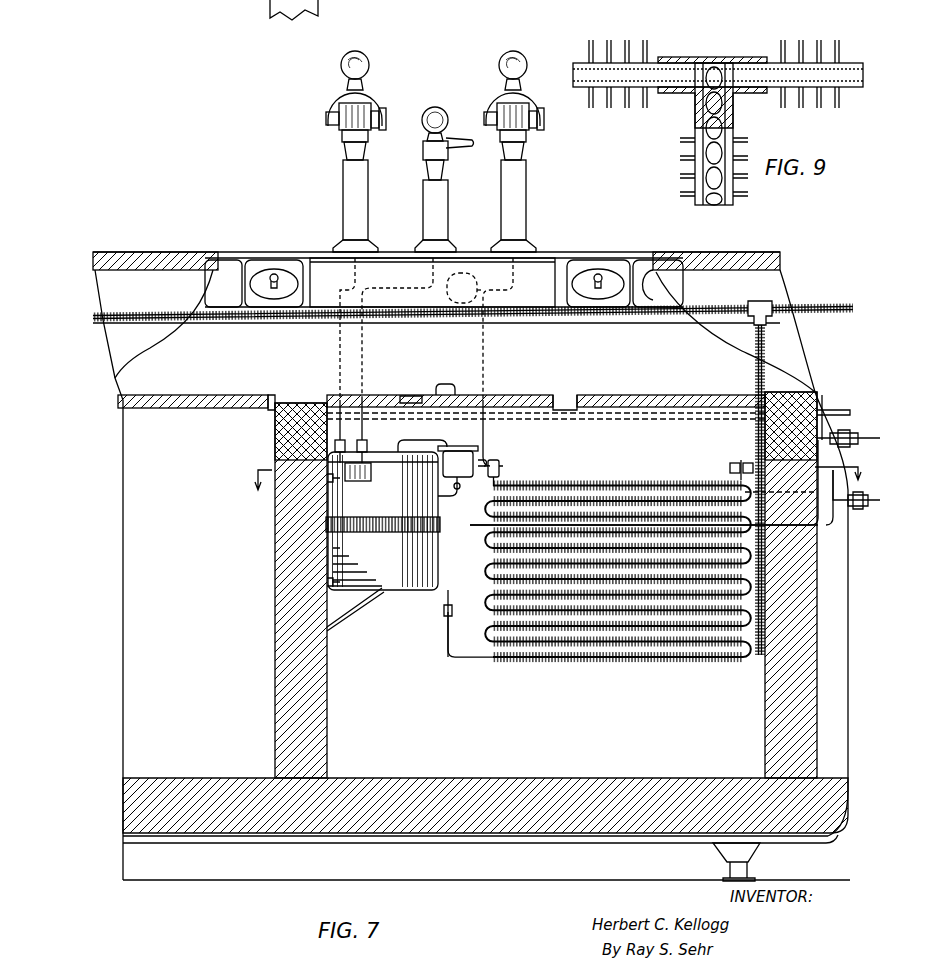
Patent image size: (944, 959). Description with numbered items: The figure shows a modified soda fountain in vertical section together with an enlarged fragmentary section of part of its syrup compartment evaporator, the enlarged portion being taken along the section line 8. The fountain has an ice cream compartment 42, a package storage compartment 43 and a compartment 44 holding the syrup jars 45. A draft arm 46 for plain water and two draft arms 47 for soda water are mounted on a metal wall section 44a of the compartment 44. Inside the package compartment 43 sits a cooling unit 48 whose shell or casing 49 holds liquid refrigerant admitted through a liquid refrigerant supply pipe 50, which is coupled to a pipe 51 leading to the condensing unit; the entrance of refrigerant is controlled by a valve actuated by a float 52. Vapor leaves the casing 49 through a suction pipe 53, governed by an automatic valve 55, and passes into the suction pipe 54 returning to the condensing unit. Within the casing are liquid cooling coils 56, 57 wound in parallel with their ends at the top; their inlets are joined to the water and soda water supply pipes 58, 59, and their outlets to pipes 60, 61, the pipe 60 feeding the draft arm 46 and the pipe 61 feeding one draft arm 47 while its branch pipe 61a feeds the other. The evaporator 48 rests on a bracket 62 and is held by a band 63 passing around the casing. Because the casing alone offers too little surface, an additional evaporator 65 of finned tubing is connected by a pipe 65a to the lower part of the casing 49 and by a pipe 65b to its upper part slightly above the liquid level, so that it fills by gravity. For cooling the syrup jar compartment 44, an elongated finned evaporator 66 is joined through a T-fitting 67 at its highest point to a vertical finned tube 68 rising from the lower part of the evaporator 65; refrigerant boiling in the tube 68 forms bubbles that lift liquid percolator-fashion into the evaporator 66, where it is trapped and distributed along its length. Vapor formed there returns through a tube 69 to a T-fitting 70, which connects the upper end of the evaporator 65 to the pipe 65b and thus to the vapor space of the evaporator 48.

In FIG. 7, the section line 8- 8 is at (557, 477).
In FIG. 7, the ice cream compartment 42 is at (199, 532).
In FIG. 7, the package storage compartment 43 is at (546, 571).
In FIG. 7, the syrup jar compartment 44 is at (436, 287).
In FIG. 7, the metal wall section 44a is at (332, 252).
In FIG. 7, the syrup jars 45 is at (262, 260).
In FIG. 7, the draft arm 46 is at (446, 206).
In FIG. 7, the draft arms 47 is at (366, 204).
In FIG. 7, the cooling unit 48 is at (412, 592).
In FIG. 7, the shell or casing 49 is at (440, 562).
In FIG. 7, the liquid refrigerant supply pipe 50 is at (497, 446).
In FIG. 7, the pipe 51 is at (850, 436).
In FIG. 7, the float 52 is at (382, 470).
In FIG. 7, the refrigerant vapor discharge or suction pipe 53 is at (440, 496).
In FIG. 7, the suction pipe 54 is at (856, 506).
In FIG. 7, the automatic valve 55 is at (462, 461).
In FIG. 7, the liquid cooling coil 56 is at (328, 478).
In FIG. 7, the liquid cooling coil 57 is at (330, 488).
In FIG. 7, the water supply pipe 58 is at (444, 384).
In FIG. 7, the soda water supply pipe 59 is at (412, 396).
In FIG. 7, the pipe 60 is at (366, 357).
In FIG. 7, the pipe 61 is at (338, 358).
In FIG. 7, the branch pipe 61a is at (505, 285).
In FIG. 7, the bracket 62 is at (365, 614).
In FIG. 7, the band 63 is at (389, 533).
In FIG. 7, the additional evaporator 65 is at (620, 485).
In FIG. 7, the pipe 65a is at (462, 659).
In FIG. 7, the pipe 65b is at (402, 449).
In FIG. 7, the elongated evaporator 66 is at (210, 315).
In FIG. 9, the elongated evaporator 66 is at (604, 45).
In FIG. 7, the T-fitting 67 is at (770, 305).
In FIG. 9, the T-fitting 67 is at (718, 57).
In FIG. 7, the vertically arranged section of finned tubing 68 is at (764, 340).
In FIG. 9, the vertically arranged section of finned tubing 68 is at (680, 186).
In FIG. 7, the tube 69 is at (486, 360).
In FIG. 7, the T-fitting 70 is at (503, 466).